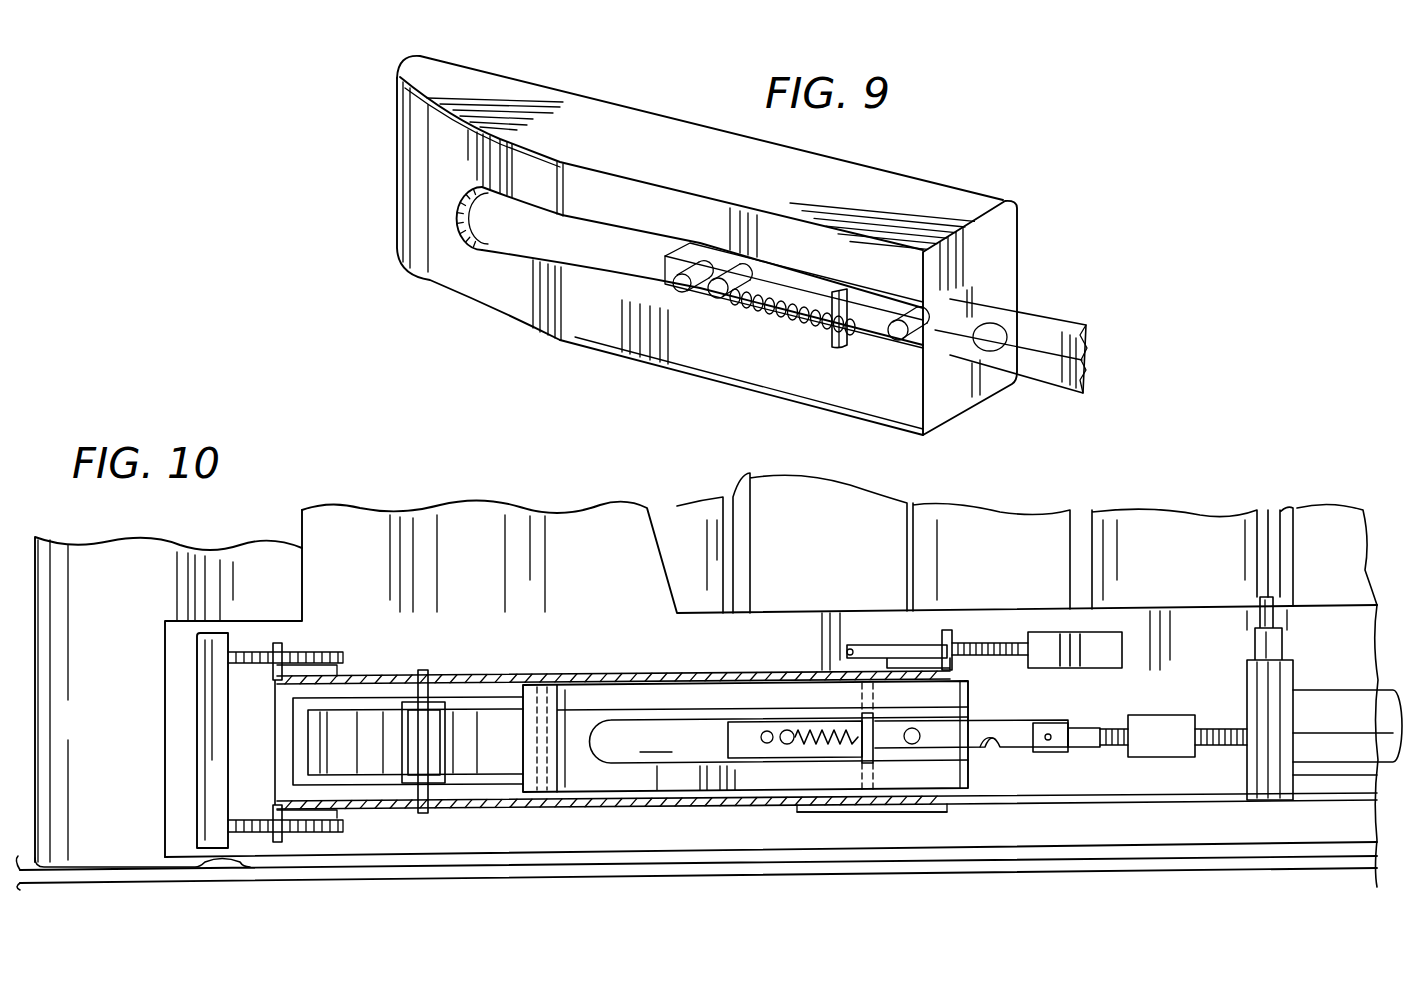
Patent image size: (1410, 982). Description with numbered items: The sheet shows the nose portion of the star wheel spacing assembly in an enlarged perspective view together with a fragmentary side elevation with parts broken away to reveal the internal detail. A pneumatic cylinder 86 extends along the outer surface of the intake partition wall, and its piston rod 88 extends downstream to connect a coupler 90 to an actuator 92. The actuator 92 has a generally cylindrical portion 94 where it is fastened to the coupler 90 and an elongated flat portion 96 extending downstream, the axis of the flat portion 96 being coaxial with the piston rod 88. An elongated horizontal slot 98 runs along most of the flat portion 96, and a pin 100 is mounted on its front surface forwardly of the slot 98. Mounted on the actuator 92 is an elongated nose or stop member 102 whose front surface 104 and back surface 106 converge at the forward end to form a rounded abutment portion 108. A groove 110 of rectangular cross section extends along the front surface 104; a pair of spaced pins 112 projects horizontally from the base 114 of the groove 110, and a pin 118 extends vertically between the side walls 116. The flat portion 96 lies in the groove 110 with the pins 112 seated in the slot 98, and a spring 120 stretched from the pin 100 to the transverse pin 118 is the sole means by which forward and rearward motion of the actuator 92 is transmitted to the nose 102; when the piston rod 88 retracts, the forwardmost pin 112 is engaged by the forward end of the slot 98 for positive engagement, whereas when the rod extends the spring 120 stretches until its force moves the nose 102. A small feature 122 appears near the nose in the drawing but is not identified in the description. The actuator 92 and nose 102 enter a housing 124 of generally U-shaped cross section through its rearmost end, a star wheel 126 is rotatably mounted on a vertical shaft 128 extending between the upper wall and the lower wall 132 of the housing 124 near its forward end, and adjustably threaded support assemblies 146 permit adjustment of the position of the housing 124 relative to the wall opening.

In FIG. 10, the pneumatic cylinder 86 is at (1323, 700).
In FIG. 10, the piston rod 88 is at (1215, 727).
In FIG. 10, the coupler 90 is at (1160, 752).
In FIG. 10, the actuator 92 is at (1007, 747).
In FIG. 10, the cylindrical portion 94 is at (1083, 727).
In FIG. 10, the flat portion 96 is at (1020, 745).
In FIG. 9, the slot 98 is at (977, 330).
In FIG. 10, the slot 98 is at (983, 728).
In FIG. 9, the pin 100 is at (712, 290).
In FIG. 10, the pin 100 is at (767, 731).
In FIG. 9, the nose or stop member 102 is at (913, 207).
In FIG. 10, the nose or stop member 102 is at (720, 690).
In FIG. 9, the front surface 104 is at (600, 333).
In FIG. 10, the front surface 104 is at (702, 697).
In FIG. 9, the back surface 106 is at (508, 75).
In FIG. 9, the rounded abutment portion 108 is at (428, 72).
In FIG. 10, the rounded abutment portion 108 is at (580, 707).
In FIG. 9, the groove 110 is at (543, 255).
In FIG. 10, the groove 110 is at (620, 728).
In FIG. 9, the pins 112 is at (727, 277).
In FIG. 10, the pins 112 is at (786, 745).
In FIG. 9, the base of the groove 114 is at (633, 208).
In FIG. 10, the base of the groove 114 is at (779, 740).
In FIG. 9, the side walls of the groove 116 is at (787, 330).
In FIG. 9, the pin 118 is at (842, 300).
In FIG. 10, the pin 118 is at (873, 727).
In FIG. 9, the spring 120 is at (762, 313).
In FIG. 10, the spring 120 is at (848, 700).
In FIG. 9, the opening 122 is at (990, 352).
In FIG. 10, the opening 122 is at (992, 740).
In FIG. 10, the housing 124 is at (377, 675).
In FIG. 10, the star wheel 126 is at (360, 757).
In FIG. 10, the vertical shaft 128 is at (433, 687).
In FIG. 10, the lower wall 132 is at (482, 810).
In FIG. 10, the adjustably threaded support assemblies 146 is at (313, 653).